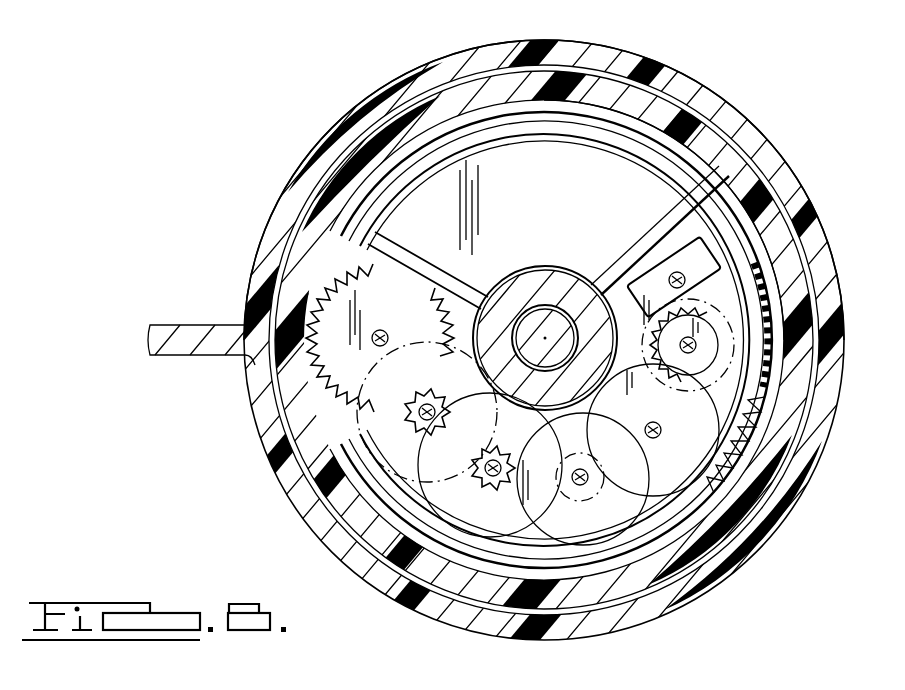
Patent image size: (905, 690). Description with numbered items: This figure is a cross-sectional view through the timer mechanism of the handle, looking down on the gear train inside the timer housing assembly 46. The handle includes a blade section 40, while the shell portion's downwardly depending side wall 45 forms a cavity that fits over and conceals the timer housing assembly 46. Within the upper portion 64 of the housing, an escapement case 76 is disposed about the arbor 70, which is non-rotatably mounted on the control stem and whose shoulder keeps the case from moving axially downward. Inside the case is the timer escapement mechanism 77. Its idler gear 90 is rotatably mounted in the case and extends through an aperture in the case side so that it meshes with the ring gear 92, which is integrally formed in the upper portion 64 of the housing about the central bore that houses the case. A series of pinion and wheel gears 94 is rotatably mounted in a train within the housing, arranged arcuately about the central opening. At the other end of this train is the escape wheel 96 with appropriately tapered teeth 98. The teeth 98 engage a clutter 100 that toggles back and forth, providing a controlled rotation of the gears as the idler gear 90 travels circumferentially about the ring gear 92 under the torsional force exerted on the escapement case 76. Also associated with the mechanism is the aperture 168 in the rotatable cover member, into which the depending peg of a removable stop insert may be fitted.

The blade section 40 is at (175, 330).
The side wall 45 is at (627, 65).
The timer housing assembly 46 is at (676, 98).
The upper portion 64 is at (714, 135).
The arbor 70 is at (572, 280).
The escapement case 76 is at (467, 140).
The timer escapement mechanism 77 is at (495, 545).
The idler gear 90 is at (387, 277).
The ring gear 92 is at (268, 452).
The pinion and wheel gears 94 is at (420, 457).
The escape wheel 96 is at (828, 265).
The teeth 98 is at (812, 217).
The clutter 100 is at (648, 285).
The aperture 168 is at (527, 318).